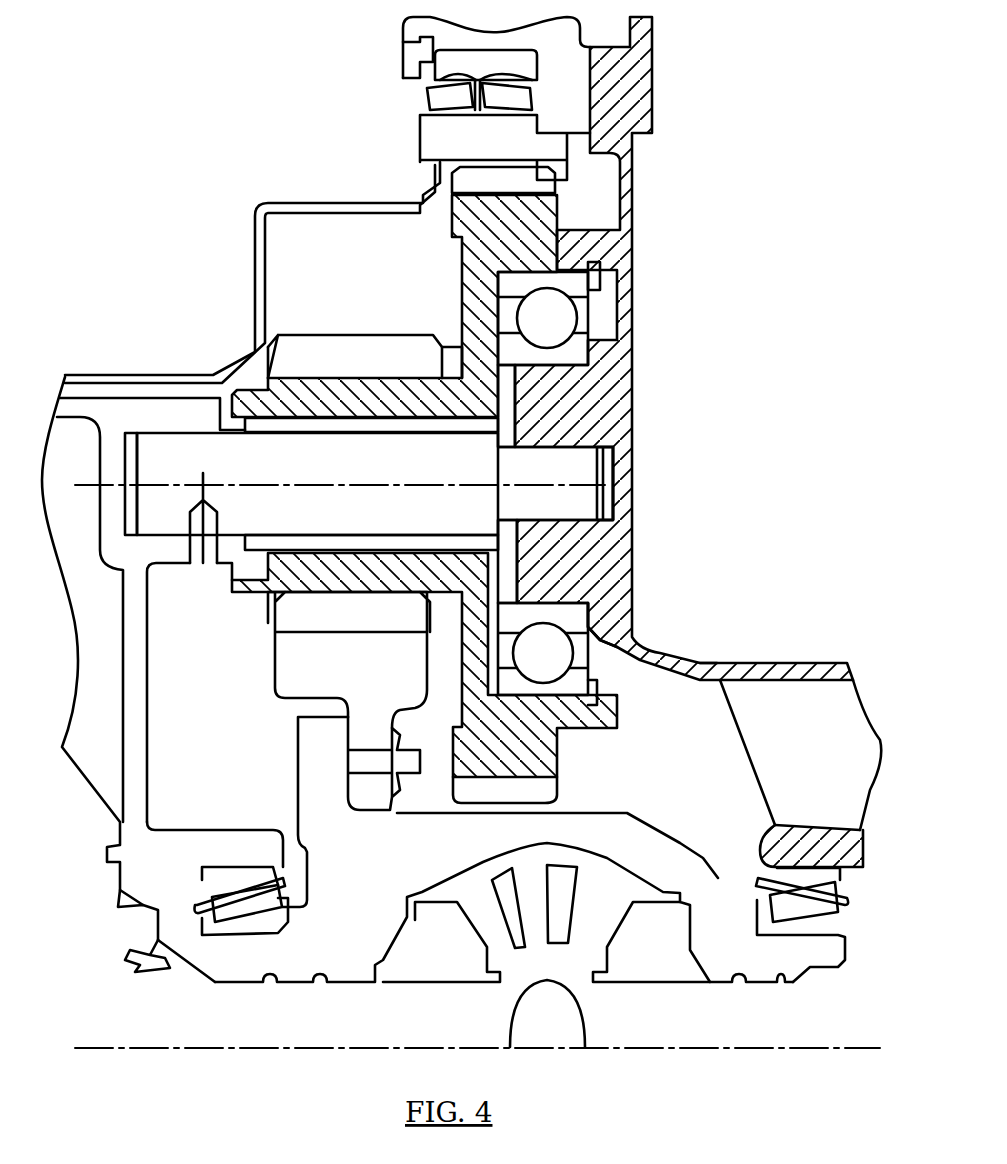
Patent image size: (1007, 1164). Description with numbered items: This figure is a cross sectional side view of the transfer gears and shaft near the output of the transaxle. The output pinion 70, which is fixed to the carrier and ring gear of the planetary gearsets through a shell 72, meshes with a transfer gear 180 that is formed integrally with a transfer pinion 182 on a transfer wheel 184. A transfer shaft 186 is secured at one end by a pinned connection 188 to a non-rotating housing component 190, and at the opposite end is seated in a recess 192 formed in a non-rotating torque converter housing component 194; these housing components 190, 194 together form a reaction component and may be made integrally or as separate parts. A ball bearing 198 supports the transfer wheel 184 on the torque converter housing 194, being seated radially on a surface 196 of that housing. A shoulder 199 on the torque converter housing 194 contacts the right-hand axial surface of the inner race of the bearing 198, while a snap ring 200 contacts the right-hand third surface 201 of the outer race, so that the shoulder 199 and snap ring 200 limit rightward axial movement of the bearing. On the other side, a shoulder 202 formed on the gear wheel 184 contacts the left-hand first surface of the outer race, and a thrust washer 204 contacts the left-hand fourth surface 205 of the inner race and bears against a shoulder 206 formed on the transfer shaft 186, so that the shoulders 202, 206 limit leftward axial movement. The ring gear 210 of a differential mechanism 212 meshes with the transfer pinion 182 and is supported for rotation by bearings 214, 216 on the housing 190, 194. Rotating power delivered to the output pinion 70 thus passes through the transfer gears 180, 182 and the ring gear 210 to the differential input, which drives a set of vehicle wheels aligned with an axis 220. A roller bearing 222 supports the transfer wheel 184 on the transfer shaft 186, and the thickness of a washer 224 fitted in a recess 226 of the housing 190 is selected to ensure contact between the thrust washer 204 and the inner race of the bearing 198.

The output pinion 70 is at (440, 143).
The shell 72 is at (326, 203).
The transfer gear 180 is at (538, 226).
The transfer pinion 182 is at (365, 356).
The transfer wheel 184 is at (310, 305).
The transfer shaft 186 is at (375, 484).
The pinned connection 188 is at (196, 548).
The housing component 190 is at (130, 790).
The recess 192 is at (568, 448).
The torque converter housing component 194 is at (610, 420).
The surface 196 is at (570, 593).
The ball bearing 198 is at (543, 318).
The shoulder 199 is at (590, 355).
The snap ring 200 is at (600, 687).
The third surface 201 is at (600, 280).
The shoulder 202 is at (497, 295).
The thrust washer 204 is at (508, 405).
The fourth surface 205 is at (497, 362).
The shoulder 206 is at (505, 527).
The ring gear 210 is at (295, 670).
The differential mechanism 212 is at (260, 800).
The bearing 214 is at (237, 910).
The bearing 216 is at (800, 905).
The axis 220 is at (760, 1050).
The roller bearing 222 is at (270, 545).
The washer 224 is at (128, 497).
The recess 226 is at (137, 460).